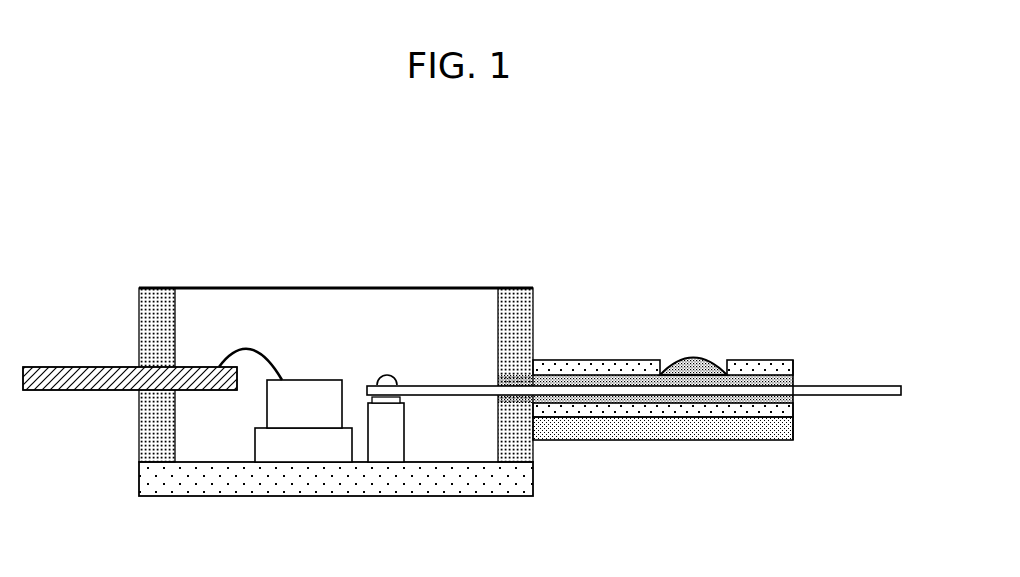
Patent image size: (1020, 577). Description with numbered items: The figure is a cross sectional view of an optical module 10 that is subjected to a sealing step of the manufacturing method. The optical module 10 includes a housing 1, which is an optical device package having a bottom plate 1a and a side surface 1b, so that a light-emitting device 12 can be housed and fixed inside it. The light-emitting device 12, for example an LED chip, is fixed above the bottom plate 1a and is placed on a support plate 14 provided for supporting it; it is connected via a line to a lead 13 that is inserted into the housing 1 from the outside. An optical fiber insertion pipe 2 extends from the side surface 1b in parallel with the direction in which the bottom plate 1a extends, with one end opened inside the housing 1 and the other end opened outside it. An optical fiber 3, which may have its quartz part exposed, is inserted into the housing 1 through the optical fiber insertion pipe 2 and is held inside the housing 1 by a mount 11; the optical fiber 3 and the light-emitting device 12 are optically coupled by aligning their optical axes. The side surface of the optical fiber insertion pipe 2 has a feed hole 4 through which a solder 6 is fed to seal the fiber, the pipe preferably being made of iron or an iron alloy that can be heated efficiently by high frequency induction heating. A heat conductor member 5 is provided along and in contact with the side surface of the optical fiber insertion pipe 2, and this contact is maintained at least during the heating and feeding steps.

The optical module 10 is at (526, 190).
The housing 1 is at (338, 287).
The bottom plate 1a is at (463, 487).
The side surface 1b is at (517, 288).
The lead 13 is at (92, 390).
The support plate 14 is at (276, 462).
The light-emitting device 12 is at (321, 440).
The mount 11 is at (388, 450).
The optical fiber insertion pipe 2 is at (598, 360).
The solder 6 is at (692, 360).
The feed hole 4 is at (713, 350).
The heat conductor member 5 is at (645, 432).
The optical fiber 3 is at (843, 395).